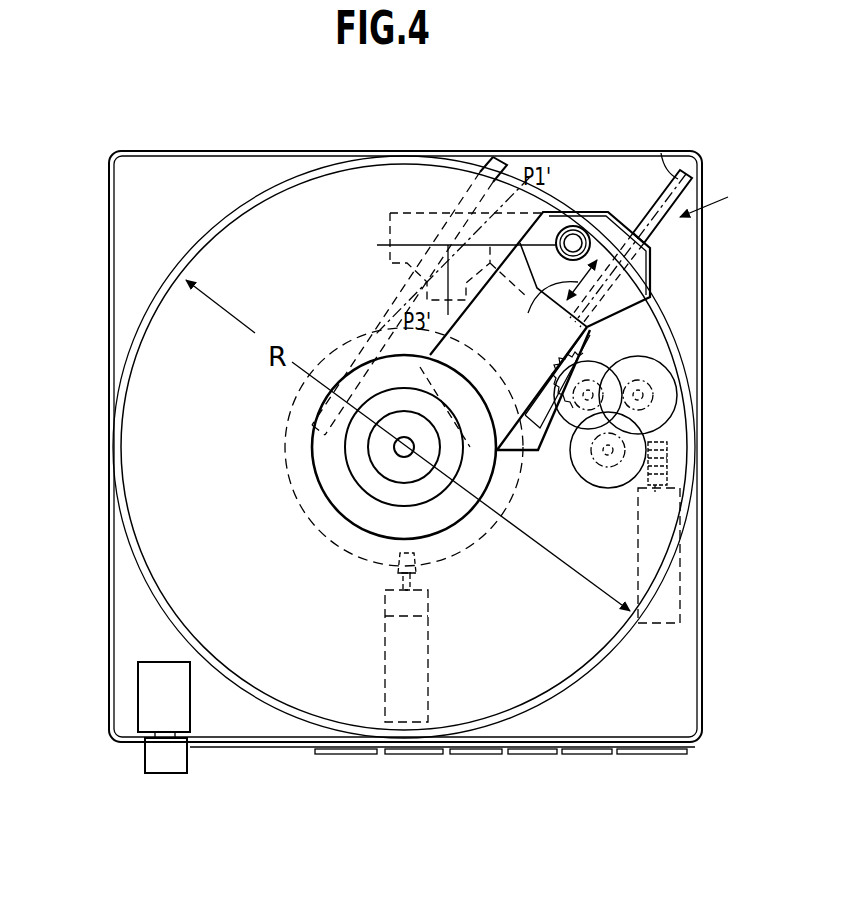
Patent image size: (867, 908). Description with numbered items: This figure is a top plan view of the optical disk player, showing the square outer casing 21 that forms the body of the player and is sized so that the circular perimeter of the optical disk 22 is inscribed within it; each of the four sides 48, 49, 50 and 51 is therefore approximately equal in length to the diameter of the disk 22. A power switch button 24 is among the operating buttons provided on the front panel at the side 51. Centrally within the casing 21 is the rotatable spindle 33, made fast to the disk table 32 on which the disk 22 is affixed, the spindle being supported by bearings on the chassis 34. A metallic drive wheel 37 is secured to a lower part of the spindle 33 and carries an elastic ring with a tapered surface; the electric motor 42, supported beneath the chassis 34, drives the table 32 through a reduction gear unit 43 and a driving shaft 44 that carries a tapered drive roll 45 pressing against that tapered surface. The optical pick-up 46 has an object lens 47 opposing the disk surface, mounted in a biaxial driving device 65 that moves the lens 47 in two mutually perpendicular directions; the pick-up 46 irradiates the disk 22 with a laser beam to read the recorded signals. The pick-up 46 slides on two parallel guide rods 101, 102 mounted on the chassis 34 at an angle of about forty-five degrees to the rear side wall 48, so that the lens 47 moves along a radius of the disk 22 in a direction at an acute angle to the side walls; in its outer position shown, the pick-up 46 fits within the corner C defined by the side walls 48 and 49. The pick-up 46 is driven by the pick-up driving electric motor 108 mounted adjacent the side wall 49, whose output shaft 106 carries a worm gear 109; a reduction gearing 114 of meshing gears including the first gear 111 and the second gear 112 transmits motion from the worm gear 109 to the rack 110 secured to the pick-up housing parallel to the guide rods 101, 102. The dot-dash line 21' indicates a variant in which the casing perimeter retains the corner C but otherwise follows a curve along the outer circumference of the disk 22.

The outer casing 21 is at (372, 446).
The curved casing perimeter variant 21' is at (382, 447).
The optical disk 22 is at (366, 172).
The power switch button 24 is at (178, 775).
The disk table 32 is at (342, 503).
The spindle 33 is at (394, 450).
The chassis 34 is at (187, 172).
The drive wheel 37 is at (466, 548).
The electric motor 42 is at (420, 668).
The reduction gear unit 43 is at (427, 597).
The driving shaft 44 is at (412, 583).
The tapered drive roll 45 is at (398, 573).
The optical pick-up 46 is at (593, 210).
The object lens 47 is at (573, 225).
The rear side wall 48 is at (427, 152).
The side wall 49 is at (700, 245).
The side wall 50 is at (109, 465).
The side wall 51 is at (286, 752).
The biaxial driving device 65 is at (608, 210).
The guide rod 101 is at (387, 302).
The guide rod 102 is at (524, 472).
The output shaft 106 is at (663, 480).
The pick-up driving electric motor 108 is at (672, 578).
The worm gear 109 is at (667, 450).
The rack 110 is at (602, 335).
The first gear 111 is at (663, 380).
The second gear 112 is at (572, 420).
The reduction gearing 114 is at (667, 417).